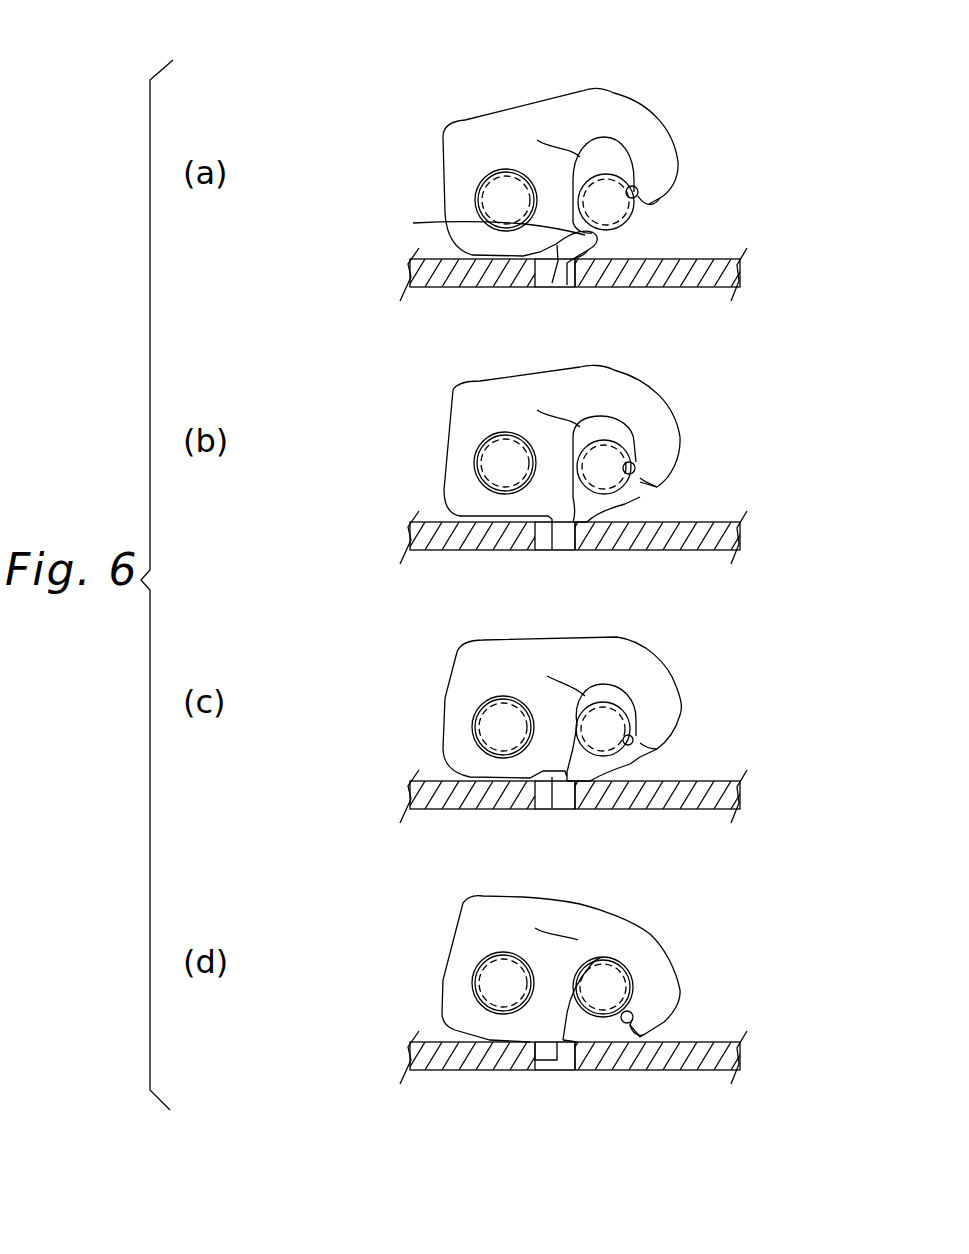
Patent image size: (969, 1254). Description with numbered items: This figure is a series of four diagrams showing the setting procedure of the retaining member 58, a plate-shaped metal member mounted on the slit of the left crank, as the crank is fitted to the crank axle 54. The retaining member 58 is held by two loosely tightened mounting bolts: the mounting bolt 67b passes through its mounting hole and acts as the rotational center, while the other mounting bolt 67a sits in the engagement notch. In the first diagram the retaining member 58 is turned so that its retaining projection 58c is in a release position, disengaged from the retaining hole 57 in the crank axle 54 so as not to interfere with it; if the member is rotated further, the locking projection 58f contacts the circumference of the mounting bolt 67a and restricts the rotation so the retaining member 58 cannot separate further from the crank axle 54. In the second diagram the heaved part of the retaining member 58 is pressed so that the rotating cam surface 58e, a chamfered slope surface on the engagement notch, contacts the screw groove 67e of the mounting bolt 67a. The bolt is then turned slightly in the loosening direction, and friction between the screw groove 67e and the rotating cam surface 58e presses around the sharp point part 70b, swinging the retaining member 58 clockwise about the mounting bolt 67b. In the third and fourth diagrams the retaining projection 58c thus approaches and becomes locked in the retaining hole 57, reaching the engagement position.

The crank axle 54 is at (609, 638).
The retaining hole 57 is at (620, 682).
The retaining member 58 is at (490, 565).
The retaining projection 58c is at (526, 684).
The rotating cam surface 58e is at (656, 678).
The locking projection 58f is at (470, 231).
The mounting bolt 67a is at (550, 524).
The mounting bolt 67b is at (462, 554).
The screw groove 67e is at (627, 529).
The sharp point part 70b is at (660, 576).